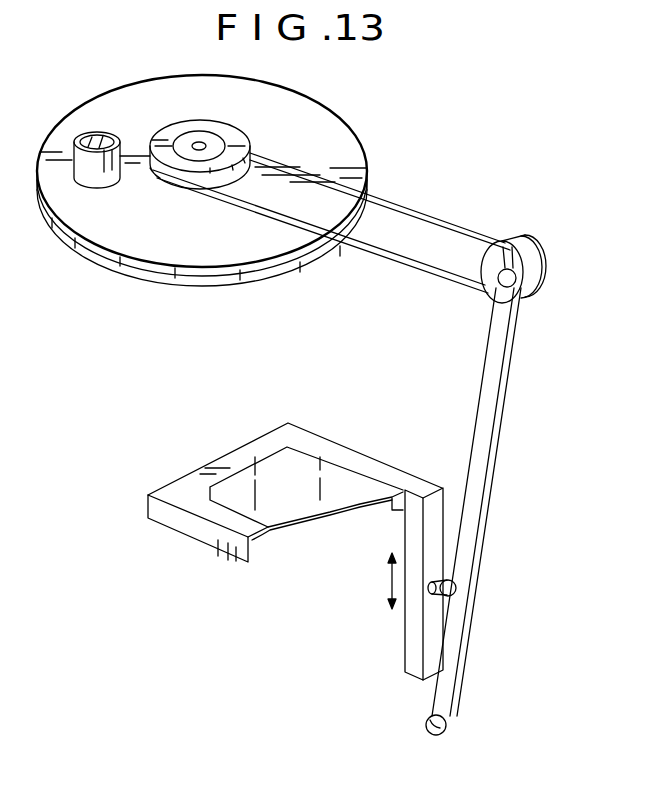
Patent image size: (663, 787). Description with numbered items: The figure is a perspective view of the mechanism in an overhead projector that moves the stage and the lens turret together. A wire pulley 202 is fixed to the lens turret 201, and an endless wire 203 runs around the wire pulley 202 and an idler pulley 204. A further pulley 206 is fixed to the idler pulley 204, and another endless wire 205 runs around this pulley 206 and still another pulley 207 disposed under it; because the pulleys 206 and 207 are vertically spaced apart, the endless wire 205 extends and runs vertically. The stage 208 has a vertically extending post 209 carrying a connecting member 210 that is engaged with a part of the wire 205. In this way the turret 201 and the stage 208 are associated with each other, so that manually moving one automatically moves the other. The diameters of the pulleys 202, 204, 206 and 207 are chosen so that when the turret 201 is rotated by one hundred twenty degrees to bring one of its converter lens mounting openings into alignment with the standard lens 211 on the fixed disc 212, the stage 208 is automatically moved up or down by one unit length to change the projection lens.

The lens turret 201 is at (300, 266).
The wire pulley 202 is at (232, 136).
The endless wire 203 is at (444, 215).
The idler pulley 204 is at (518, 252).
The endless wire 205 is at (480, 410).
The pulley 206 is at (497, 285).
The pulley 207 is at (447, 729).
The stage 208 is at (253, 450).
The post 209 is at (405, 622).
The connecting member 210 is at (443, 581).
The standard lens 211 is at (95, 170).
The fixed disc 212 is at (345, 150).